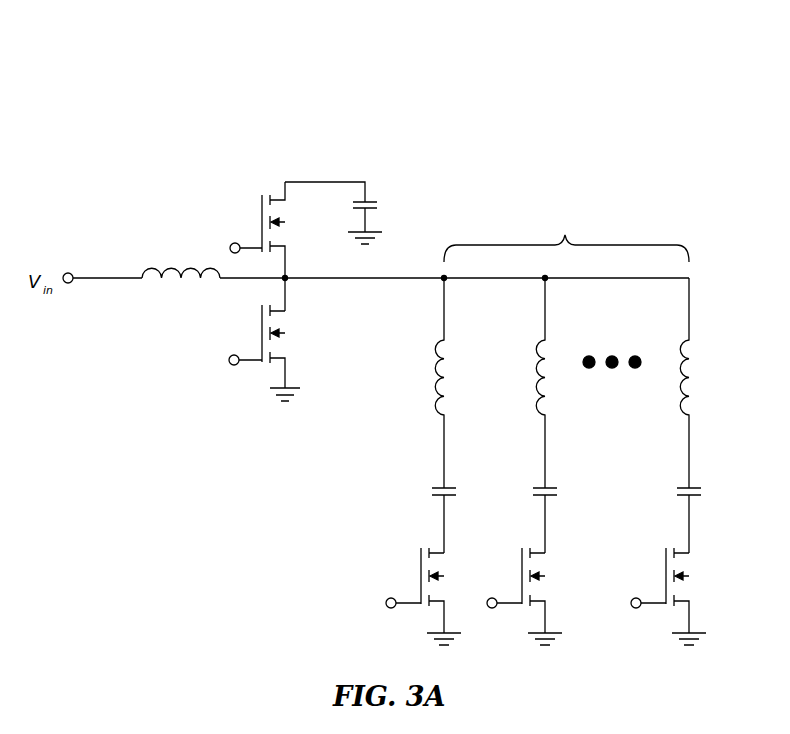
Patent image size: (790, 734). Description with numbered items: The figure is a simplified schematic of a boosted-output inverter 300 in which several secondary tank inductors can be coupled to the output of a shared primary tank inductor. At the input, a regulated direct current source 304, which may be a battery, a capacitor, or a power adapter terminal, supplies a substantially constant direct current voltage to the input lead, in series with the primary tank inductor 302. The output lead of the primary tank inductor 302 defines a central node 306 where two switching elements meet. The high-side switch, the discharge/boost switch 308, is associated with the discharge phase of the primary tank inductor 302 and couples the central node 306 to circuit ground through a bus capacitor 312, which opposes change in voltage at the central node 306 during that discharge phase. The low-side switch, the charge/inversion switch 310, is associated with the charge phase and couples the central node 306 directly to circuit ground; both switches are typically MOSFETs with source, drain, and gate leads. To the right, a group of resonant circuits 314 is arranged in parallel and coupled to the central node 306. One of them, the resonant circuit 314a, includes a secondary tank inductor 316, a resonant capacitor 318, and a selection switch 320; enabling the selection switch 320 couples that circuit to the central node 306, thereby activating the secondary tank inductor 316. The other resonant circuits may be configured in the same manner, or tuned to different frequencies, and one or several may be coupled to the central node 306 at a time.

The boosted-output inverter 300 is at (101, 76).
The primary tank inductor 302 is at (154, 294).
The regulated direct current source 304 is at (70, 285).
The central node 306 is at (294, 285).
The discharge/boost switch 308 is at (295, 224).
The charge/inversion switch 310 is at (294, 335).
The bus capacitor 312 is at (368, 200).
The group of resonant circuits 314 is at (523, 427).
The resonant circuit 314a is at (398, 461).
The secondary tank inductor 316 is at (444, 420).
The resonant capacitor 318 is at (446, 486).
The selection switch 320 is at (401, 572).